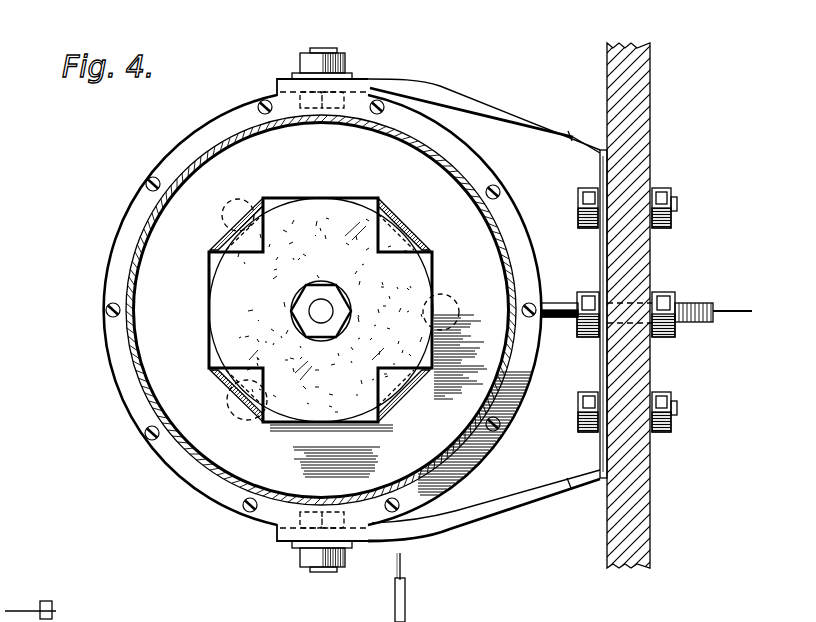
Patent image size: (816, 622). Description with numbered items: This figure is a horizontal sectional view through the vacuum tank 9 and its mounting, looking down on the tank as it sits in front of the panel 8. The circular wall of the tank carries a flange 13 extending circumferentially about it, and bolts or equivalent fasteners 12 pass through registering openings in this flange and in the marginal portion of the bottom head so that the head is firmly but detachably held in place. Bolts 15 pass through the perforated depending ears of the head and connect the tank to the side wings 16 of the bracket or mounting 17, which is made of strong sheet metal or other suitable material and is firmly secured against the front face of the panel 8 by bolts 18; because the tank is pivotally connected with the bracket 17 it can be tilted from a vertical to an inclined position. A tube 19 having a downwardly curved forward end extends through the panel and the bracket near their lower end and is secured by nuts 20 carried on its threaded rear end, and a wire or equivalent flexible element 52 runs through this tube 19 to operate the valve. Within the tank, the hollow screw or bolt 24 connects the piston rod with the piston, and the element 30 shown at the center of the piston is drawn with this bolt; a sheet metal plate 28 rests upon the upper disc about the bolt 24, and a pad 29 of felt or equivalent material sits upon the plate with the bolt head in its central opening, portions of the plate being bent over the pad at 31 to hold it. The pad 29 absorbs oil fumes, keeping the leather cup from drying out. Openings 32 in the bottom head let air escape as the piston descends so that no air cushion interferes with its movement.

The panel 8 is at (652, 538).
The vacuum tank 9 is at (140, 228).
The bolts or equivalent fasteners 12 is at (147, 442).
The flange 13 is at (104, 262).
The bolts 15 is at (320, 50).
The side wings 16 is at (422, 80).
The bracket or mounting 17 is at (600, 159).
The bolts 18 is at (678, 205).
The tube 19 is at (700, 304).
The nuts 20 is at (588, 292).
The hollow screw or bolt 24 is at (303, 319).
The sheet metal plate 28 is at (352, 440).
The pad 29 is at (212, 312).
The nut 30 is at (345, 297).
The bent-over portions of the plate 31 is at (222, 238).
The openings 32 is at (241, 198).
The wire or equivalent flexible element 52 is at (742, 314).